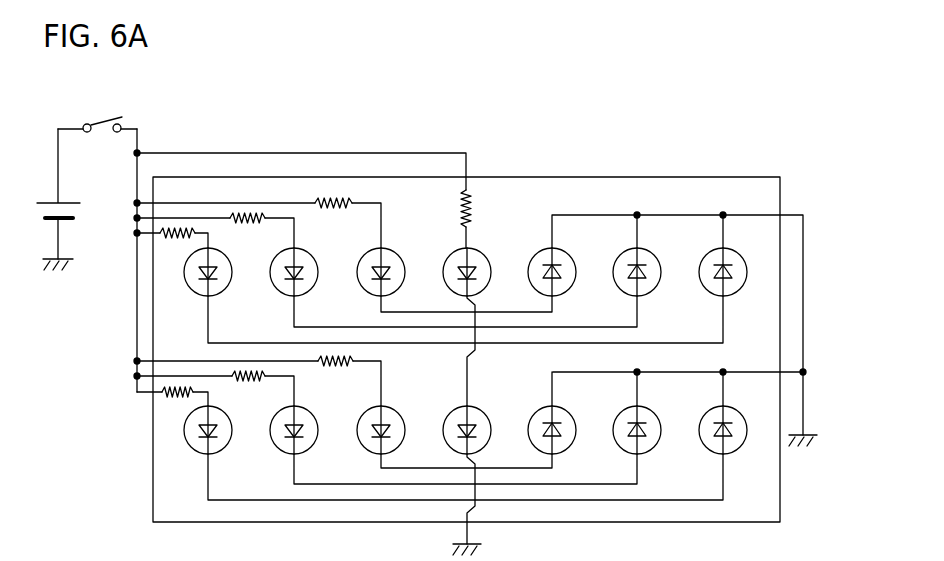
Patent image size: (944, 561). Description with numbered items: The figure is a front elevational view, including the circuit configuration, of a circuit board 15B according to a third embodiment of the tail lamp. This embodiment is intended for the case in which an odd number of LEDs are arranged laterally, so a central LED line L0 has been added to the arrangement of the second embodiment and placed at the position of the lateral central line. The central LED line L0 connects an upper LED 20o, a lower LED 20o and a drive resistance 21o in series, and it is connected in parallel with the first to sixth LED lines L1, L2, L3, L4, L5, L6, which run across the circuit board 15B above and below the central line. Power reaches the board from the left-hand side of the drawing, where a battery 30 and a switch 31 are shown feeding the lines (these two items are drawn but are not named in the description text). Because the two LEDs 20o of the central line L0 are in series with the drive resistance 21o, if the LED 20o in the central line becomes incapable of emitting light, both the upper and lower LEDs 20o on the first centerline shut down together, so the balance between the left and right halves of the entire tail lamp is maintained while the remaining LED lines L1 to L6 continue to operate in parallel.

The battery 30 is at (84, 212).
The switch 31 is at (95, 119).
The circuit board 15B is at (766, 207).
The central LED line L0 is at (395, 151).
The drive resistance 21o is at (477, 208).
The LED 20o is at (489, 268).
The first LED line L1 is at (569, 212).
The second LED line L2 is at (648, 210).
The third LED line L3 is at (730, 210).
The fourth LED line L4 is at (562, 462).
The fifth LED line L5 is at (650, 467).
The sixth LED line L6 is at (736, 470).